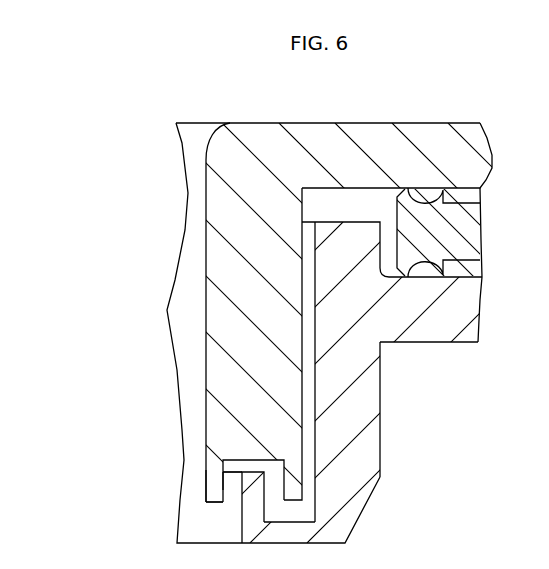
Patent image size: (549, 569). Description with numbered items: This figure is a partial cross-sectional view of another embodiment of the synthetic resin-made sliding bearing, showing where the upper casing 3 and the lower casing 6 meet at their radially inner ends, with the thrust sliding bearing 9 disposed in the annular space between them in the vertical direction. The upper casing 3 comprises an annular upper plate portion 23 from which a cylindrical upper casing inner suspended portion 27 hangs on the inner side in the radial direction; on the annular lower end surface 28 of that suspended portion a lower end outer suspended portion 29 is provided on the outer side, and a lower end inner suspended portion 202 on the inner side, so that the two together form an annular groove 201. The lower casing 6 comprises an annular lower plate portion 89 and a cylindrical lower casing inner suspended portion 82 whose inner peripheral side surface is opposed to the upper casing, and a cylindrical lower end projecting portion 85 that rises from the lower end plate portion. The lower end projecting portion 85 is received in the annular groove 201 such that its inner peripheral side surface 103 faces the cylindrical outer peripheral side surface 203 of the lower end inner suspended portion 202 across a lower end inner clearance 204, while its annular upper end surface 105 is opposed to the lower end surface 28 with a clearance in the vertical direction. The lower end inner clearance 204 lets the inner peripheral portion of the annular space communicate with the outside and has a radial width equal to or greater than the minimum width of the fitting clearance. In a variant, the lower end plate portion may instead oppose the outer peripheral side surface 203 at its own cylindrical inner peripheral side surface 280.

The upper casing 3 is at (377, 112).
The lower casing 6 is at (474, 345).
The thrust sliding bearing 9 is at (445, 232).
The upper plate portion 23 is at (315, 142).
The upper casing inner suspended portion 27 is at (258, 291).
The lower end surface 28 is at (268, 462).
The lower end outer suspended portion 29 is at (285, 490).
The lower casing inner suspended portion 82 is at (358, 384).
The lower end projecting portion 85 is at (252, 506).
The lower plate portion 89 is at (437, 310).
The inner peripheral side surface 103 is at (262, 524).
The upper end surface 105 is at (248, 462).
The annular groove 201 is at (213, 480).
The lower end inner suspended portion 202 is at (200, 477).
The outer peripheral side surface 203 is at (233, 488).
The lower end inner clearance 204 is at (224, 506).
The inner peripheral side surface 280 is at (242, 537).